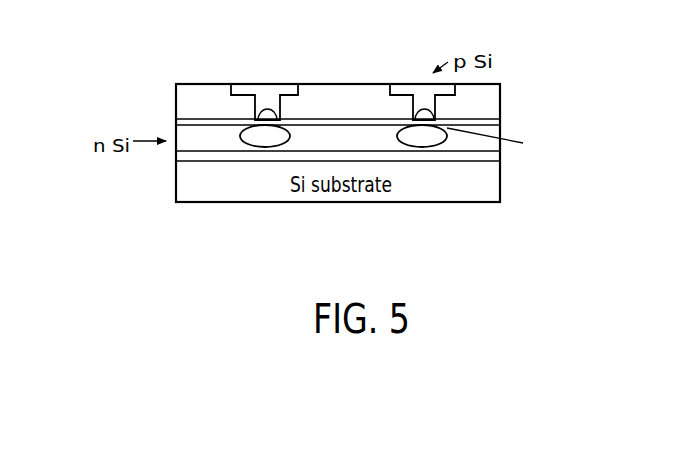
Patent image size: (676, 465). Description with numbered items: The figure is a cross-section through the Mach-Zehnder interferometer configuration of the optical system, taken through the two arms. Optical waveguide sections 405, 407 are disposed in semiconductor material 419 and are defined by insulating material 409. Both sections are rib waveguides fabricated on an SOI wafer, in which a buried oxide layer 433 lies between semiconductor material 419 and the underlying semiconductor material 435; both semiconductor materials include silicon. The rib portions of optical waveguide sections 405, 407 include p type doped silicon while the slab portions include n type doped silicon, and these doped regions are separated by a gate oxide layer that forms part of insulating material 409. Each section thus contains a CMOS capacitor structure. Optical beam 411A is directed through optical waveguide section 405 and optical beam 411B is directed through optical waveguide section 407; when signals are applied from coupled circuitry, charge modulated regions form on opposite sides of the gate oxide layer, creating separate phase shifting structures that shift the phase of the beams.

The optical waveguide section 405 is at (267, 85).
The optical waveguide section 407 is at (422, 85).
The insulating material 409 is at (176, 88).
The semiconductor material 419 is at (240, 85).
The buried oxide layer 433 is at (513, 160).
The semiconductor material 435 is at (500, 199).
The optical beam 411A is at (250, 147).
The optical beam 411B is at (433, 148).